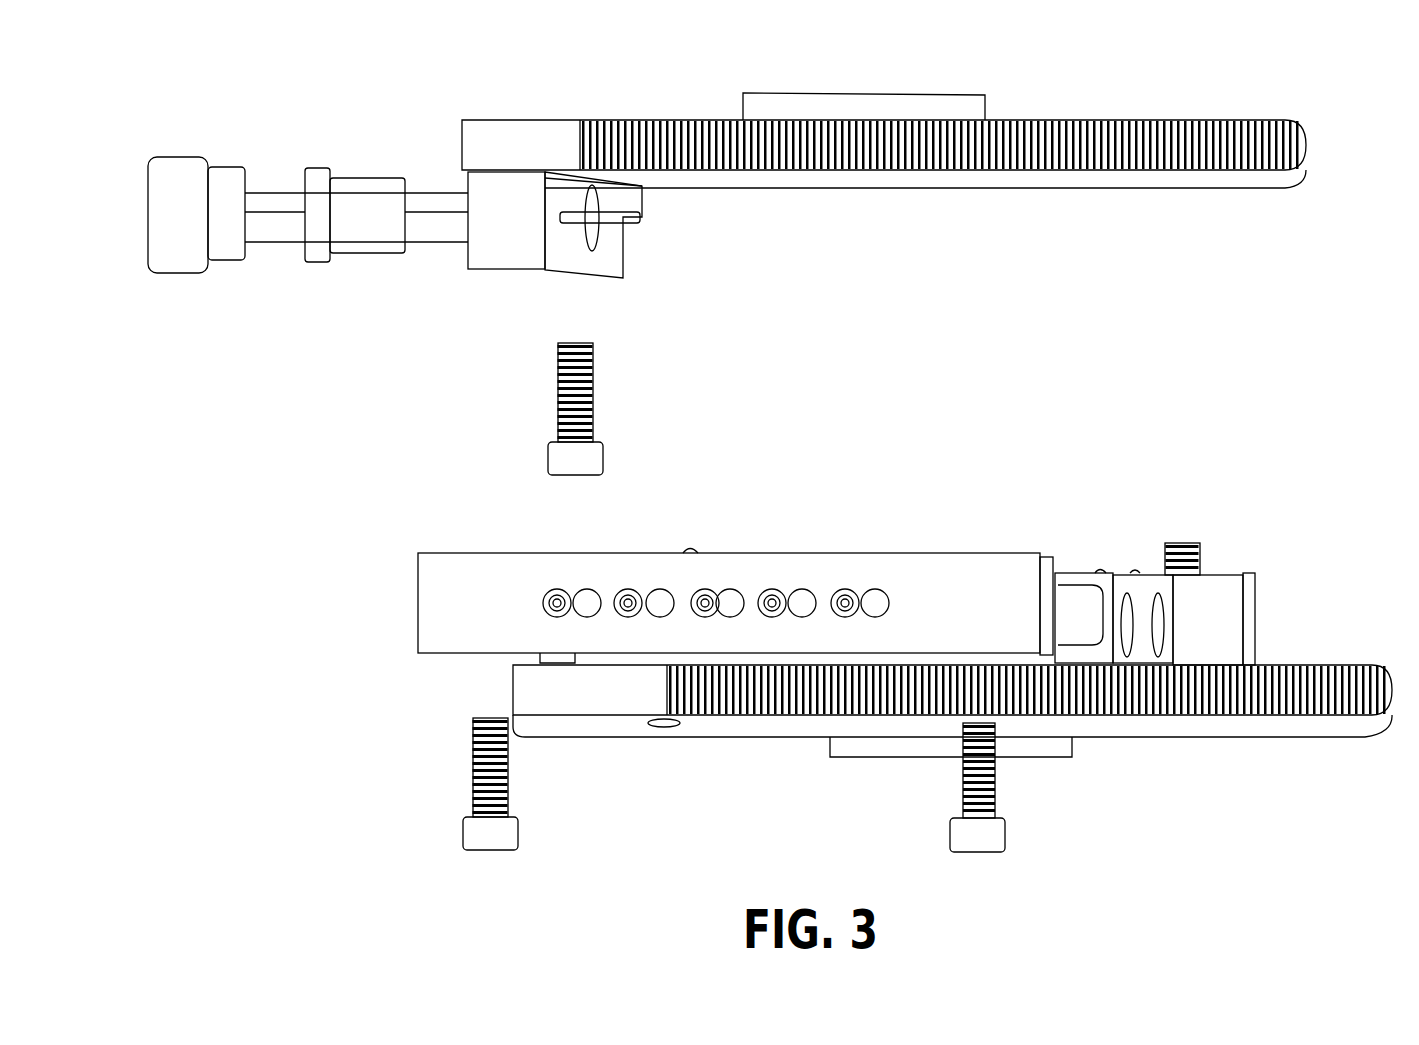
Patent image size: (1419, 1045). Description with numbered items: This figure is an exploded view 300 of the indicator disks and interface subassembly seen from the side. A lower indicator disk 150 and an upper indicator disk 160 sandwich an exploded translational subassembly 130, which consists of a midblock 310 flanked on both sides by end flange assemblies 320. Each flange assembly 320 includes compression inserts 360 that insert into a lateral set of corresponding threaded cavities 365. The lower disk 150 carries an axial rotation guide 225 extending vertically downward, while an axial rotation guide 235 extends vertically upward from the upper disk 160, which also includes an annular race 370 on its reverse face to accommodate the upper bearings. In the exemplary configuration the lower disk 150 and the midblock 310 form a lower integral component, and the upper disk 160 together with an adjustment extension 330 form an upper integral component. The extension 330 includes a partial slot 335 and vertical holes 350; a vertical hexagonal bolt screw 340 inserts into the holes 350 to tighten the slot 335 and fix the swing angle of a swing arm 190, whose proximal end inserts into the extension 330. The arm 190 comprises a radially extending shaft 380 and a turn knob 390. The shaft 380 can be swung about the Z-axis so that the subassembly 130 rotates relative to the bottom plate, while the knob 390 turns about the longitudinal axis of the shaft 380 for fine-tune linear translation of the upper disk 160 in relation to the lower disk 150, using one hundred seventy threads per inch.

The translational subassembly 130 is at (325, 535).
The lower indicator disk 150 is at (1300, 737).
The upper indicator disk 160 is at (1082, 122).
The swing arm 190 is at (450, 140).
The axial rotation guide 225 is at (830, 750).
The axial rotation guide 235 is at (743, 93).
The exploded view 300 is at (1172, 289).
The midblock 310 is at (1080, 573).
The end flange assemblies 320 is at (440, 553).
The adjustment extension 330 is at (468, 270).
The partial slot 335 is at (648, 228).
The vertical hexagonal bolt screw 340 is at (595, 393).
The vertical holes 350 is at (1108, 186).
The compression inserts 360 is at (783, 590).
The threaded cavities 365 is at (882, 590).
The annular race 370 is at (672, 726).
The radially extending shaft 380 is at (338, 262).
The turn knob 390 is at (228, 270).